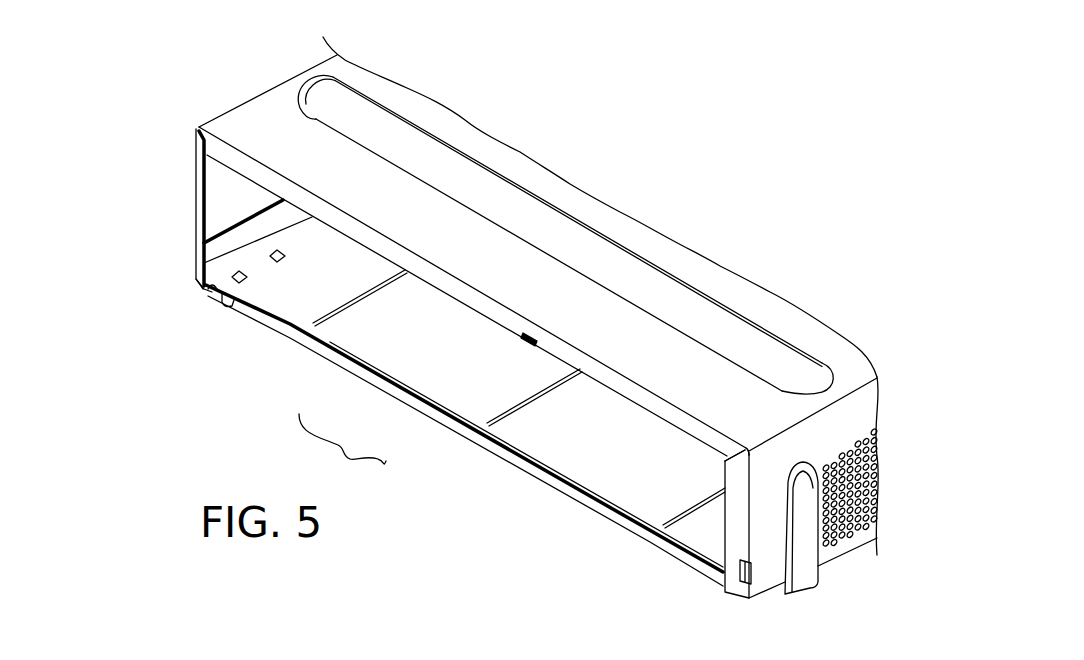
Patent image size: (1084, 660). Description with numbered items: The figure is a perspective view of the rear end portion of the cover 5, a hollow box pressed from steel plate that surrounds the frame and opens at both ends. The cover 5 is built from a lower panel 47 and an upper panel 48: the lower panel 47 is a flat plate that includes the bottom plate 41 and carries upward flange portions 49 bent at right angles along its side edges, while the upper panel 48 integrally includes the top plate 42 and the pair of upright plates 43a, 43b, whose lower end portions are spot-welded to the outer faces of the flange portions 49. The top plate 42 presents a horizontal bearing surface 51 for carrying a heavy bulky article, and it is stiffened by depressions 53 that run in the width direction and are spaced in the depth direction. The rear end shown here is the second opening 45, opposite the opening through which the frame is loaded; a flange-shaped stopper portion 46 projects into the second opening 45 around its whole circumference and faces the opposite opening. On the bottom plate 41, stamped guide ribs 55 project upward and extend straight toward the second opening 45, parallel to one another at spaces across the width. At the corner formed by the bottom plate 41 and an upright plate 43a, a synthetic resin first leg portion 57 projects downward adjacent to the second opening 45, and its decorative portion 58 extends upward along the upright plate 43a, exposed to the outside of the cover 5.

The cover 5 is at (342, 449).
The bottom plate 41 is at (607, 473).
The top plate 42 is at (704, 268).
The upright plate 43a is at (862, 407).
The upright plate 43b is at (228, 182).
The second opening 45 is at (204, 289).
The stopper portion 46 is at (228, 300).
The lower panel 47 is at (448, 390).
The upper panel 48 is at (474, 270).
The flange portion 49 is at (290, 215).
The bearing surface 51 is at (486, 228).
The depression 53 is at (407, 131).
The guide rib 55 is at (352, 305).
The first leg portion 57 is at (805, 575).
The decorative portion 58 is at (807, 500).